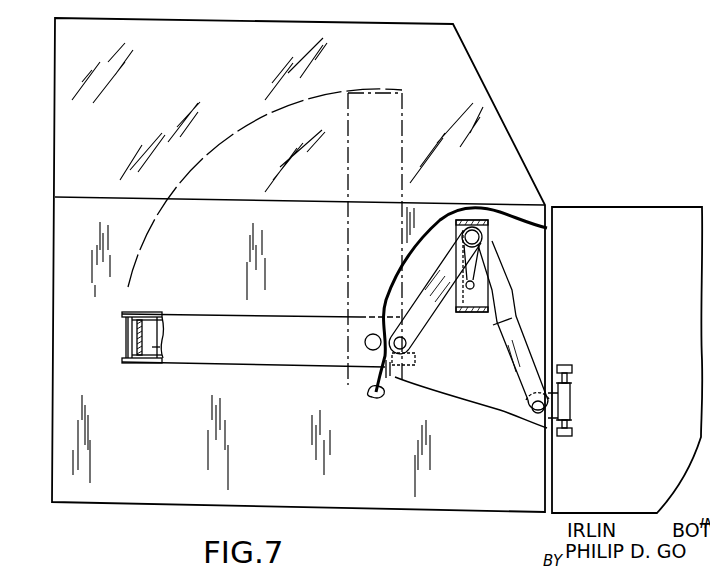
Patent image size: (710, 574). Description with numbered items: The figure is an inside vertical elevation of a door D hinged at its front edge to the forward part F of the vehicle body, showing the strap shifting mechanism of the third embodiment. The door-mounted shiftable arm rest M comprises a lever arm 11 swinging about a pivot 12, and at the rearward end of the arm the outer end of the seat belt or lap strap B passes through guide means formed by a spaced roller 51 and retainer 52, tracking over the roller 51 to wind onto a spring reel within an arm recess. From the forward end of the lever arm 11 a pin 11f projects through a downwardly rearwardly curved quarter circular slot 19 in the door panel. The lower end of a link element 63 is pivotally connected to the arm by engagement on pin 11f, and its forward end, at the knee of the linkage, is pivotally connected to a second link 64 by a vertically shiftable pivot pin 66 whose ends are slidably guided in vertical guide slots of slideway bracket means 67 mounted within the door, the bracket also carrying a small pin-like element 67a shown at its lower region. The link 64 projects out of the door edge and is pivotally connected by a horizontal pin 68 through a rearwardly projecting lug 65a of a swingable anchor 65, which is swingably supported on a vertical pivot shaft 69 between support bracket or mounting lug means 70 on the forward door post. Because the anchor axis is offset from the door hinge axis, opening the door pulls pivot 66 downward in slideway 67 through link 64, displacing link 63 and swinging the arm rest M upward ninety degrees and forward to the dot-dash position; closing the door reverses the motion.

The lever arm 11 is at (289, 315).
The pin 11f is at (411, 354).
The pivot 12 is at (364, 343).
The slot 19 is at (385, 393).
The roller 51 is at (158, 347).
The retainer 52 is at (122, 339).
The link element 63 is at (432, 289).
The second link 64 is at (500, 296).
The swingable anchor 65 is at (573, 402).
The rearwardly projecting lug 65a is at (573, 388).
The vertically shiftable pivot pin 66 is at (458, 230).
The slideway bracket means 67 is at (489, 314).
The housing pin 67a is at (462, 290).
The horizontal pin 68 is at (532, 412).
The vertical pivot shaft 69 is at (583, 422).
The support bracket or mounting lug means 70 is at (567, 365).
The seat belt or lap strap B is at (135, 365).
The door D is at (48, 388).
The forward part of the vehicle body door framing region F is at (628, 207).
The arm rest M is at (412, 133).